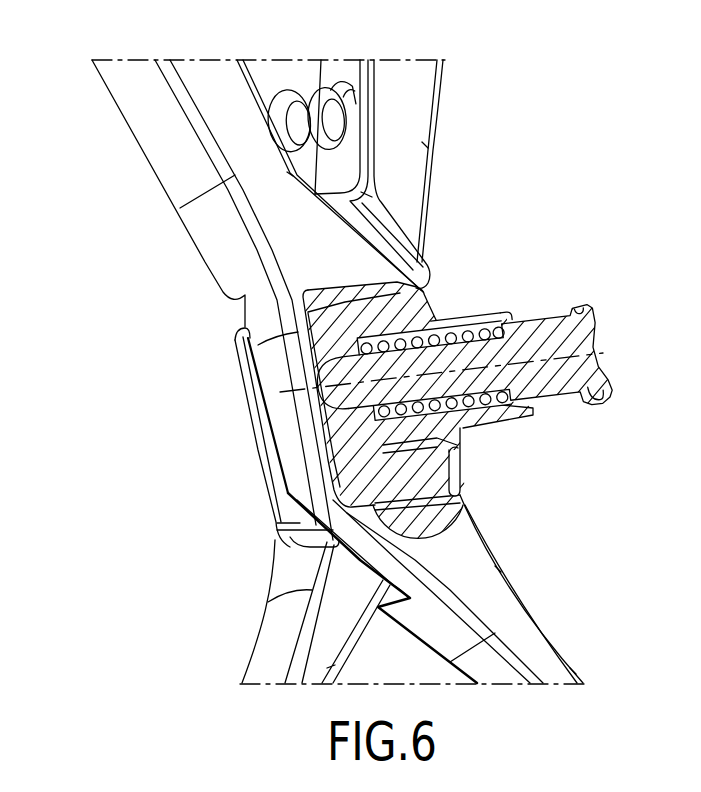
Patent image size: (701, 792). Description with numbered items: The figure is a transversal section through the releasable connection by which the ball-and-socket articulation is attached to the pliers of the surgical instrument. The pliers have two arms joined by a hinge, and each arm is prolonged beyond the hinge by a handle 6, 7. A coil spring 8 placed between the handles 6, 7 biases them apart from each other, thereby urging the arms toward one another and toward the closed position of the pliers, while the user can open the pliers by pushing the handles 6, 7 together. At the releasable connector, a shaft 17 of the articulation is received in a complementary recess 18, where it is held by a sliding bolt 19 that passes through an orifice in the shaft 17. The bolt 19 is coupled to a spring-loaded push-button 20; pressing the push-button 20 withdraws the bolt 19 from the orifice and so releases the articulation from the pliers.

The handle 6 is at (142, 120).
The handle 7 is at (410, 107).
The coil spring 8 is at (282, 92).
The shaft 17 is at (425, 493).
The recess 18 is at (458, 500).
The sliding bolt 19 is at (403, 473).
The spring-loaded push-button 20 is at (541, 333).